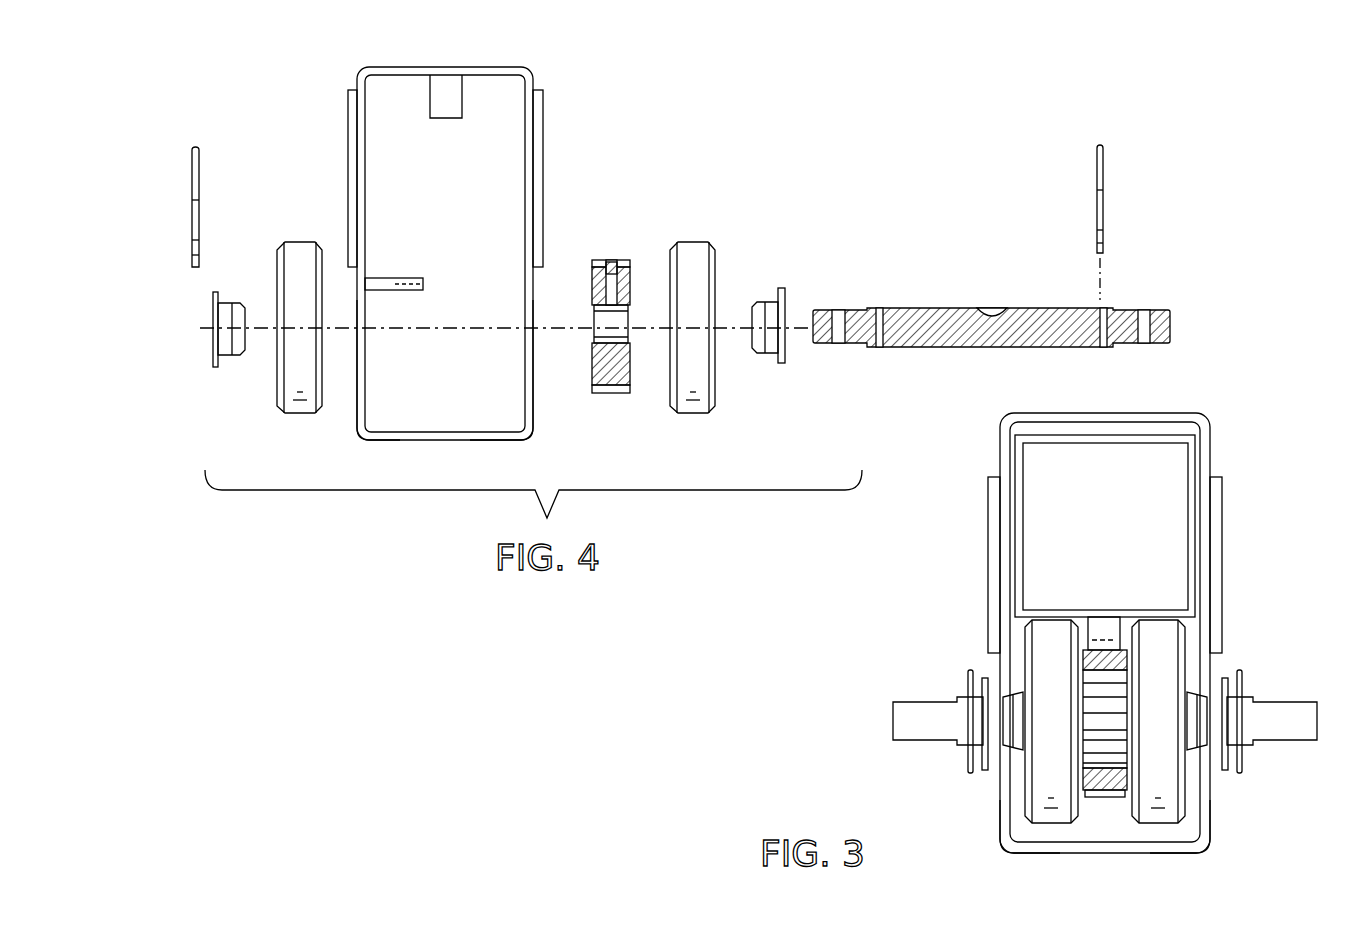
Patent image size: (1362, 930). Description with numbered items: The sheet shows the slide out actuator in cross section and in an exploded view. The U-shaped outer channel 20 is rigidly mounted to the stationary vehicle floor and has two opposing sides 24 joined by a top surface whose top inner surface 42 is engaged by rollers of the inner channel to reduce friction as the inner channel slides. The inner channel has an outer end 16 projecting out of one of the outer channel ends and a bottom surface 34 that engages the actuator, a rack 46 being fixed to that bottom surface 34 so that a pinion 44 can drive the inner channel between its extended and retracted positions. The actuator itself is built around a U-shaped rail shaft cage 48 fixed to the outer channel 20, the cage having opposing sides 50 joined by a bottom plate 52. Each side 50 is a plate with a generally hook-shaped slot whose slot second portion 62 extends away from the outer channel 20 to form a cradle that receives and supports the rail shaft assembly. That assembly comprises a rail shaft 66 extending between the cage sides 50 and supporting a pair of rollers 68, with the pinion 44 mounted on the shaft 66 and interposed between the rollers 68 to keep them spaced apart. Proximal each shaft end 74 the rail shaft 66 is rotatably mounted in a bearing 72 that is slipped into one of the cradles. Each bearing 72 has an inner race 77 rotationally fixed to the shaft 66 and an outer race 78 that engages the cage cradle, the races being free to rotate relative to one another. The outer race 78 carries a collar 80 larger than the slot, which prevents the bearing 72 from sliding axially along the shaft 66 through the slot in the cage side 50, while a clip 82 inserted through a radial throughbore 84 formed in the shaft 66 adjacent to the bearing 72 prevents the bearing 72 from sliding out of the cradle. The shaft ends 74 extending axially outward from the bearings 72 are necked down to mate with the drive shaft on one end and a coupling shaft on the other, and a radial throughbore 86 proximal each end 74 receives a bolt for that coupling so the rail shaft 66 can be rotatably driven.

In FIG. 3, the outer end 16 is at (1190, 496).
In FIG. 4, the outer channel 20 is at (535, 72).
In FIG. 3, the outer channel 20 is at (1216, 432).
In FIG. 3, the sides 24 is at (1000, 442).
In FIG. 3, the bottom surface 34 is at (1010, 630).
In FIG. 3, the top inner surface 42 is at (1053, 425).
In FIG. 4, the pinion 44 is at (595, 393).
In FIG. 3, the pinion 44 is at (1100, 772).
In FIG. 3, the rack 46 is at (1105, 630).
In FIG. 4, the rail shaft cage 48 is at (357, 435).
In FIG. 3, the rail shaft cage 48 is at (998, 856).
In FIG. 4, the sides 50 is at (533, 255).
In FIG. 3, the sides 50 is at (988, 546).
In FIG. 4, the bottom plate 52 is at (490, 440).
In FIG. 3, the bottom plate 52 is at (1195, 855).
In FIG. 3, the slot second portion 62 is at (1148, 411).
In FIG. 4, the rail shaft 66 is at (1024, 325).
In FIG. 3, the rail shaft 66 is at (1290, 700).
In FIG. 4, the rollers 68 is at (285, 242).
In FIG. 3, the rollers 68 is at (1025, 802).
In FIG. 4, the bearing 72 is at (235, 358).
In FIG. 3, the bearing 72 is at (982, 772).
In FIG. 4, the shaft end 74 is at (813, 318).
In FIG. 3, the shaft end 74 is at (893, 722).
In FIG. 4, the inner race 77 is at (210, 340).
In FIG. 4, the outer race 78 is at (235, 300).
In FIG. 3, the outer race 78 is at (1105, 721).
In FIG. 4, the collar 80 is at (213, 292).
In FIG. 4, the clip 82 is at (195, 147).
In FIG. 3, the clip 82 is at (969, 672).
In FIG. 4, the radial throughbore 84 is at (880, 312).
In FIG. 4, the radial throughbore 86 is at (840, 312).